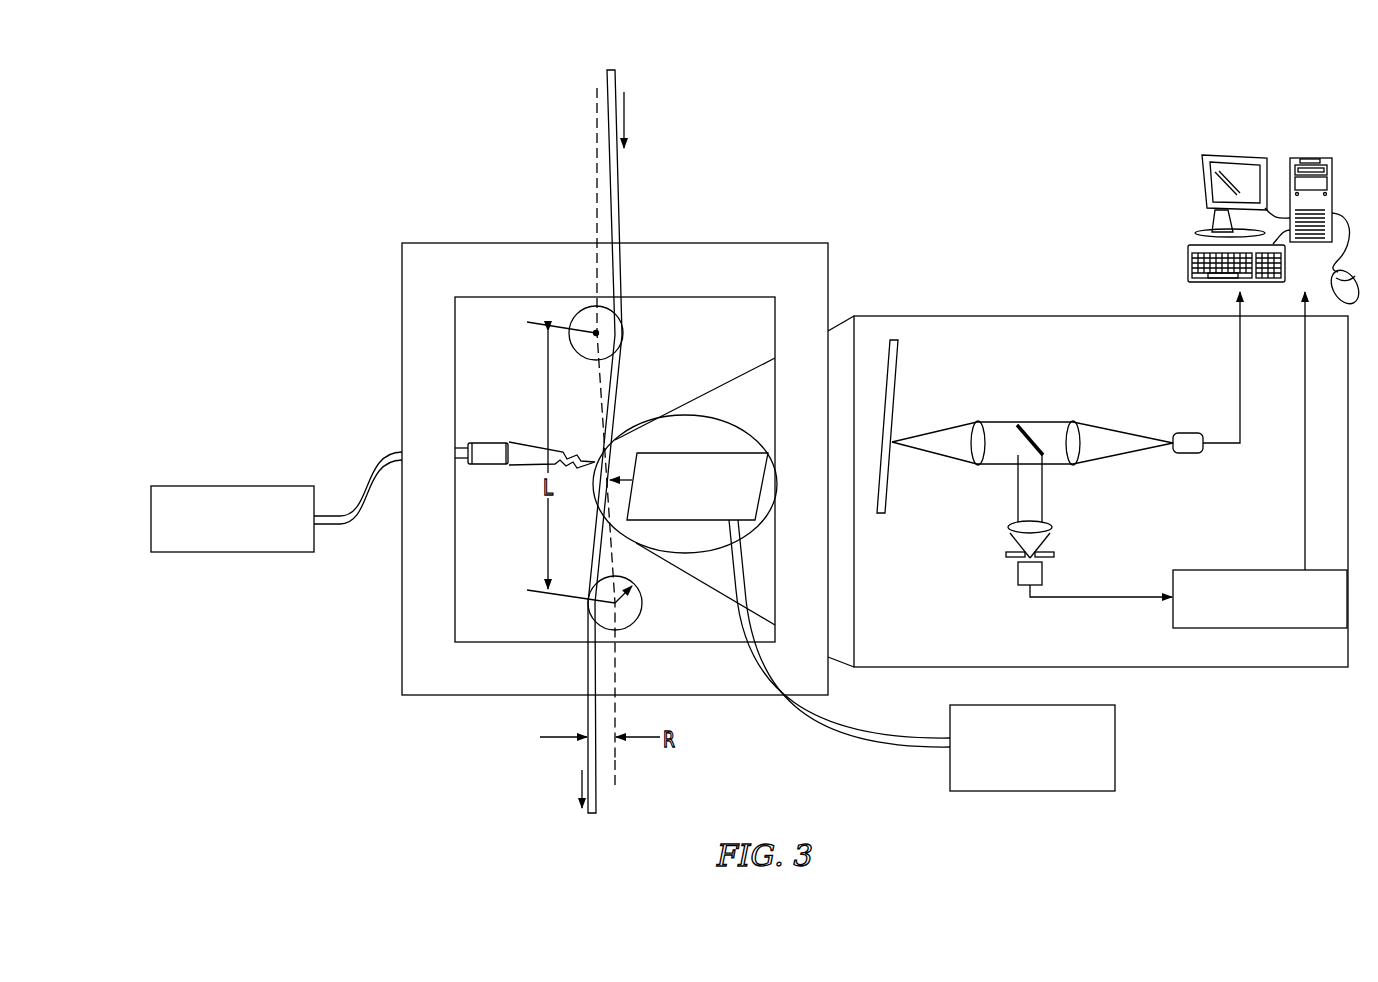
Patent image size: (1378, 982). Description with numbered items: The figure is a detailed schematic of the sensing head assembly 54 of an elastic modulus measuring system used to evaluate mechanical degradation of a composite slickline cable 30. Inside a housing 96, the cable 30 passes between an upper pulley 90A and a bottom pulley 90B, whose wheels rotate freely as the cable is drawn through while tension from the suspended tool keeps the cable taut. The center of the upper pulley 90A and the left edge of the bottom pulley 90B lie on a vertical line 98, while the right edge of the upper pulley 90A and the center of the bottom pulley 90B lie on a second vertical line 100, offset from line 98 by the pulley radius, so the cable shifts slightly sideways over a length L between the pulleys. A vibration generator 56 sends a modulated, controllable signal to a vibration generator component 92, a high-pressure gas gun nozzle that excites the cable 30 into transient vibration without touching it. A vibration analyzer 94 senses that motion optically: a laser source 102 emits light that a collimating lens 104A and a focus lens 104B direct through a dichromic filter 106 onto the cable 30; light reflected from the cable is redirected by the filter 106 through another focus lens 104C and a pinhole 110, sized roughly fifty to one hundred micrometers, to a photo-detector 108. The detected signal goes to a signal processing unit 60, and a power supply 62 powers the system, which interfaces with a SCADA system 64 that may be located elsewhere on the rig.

The composite slickline cable 30 is at (619, 165).
The sensing head assembly 54 is at (400, 293).
The vibration generator 56 is at (170, 554).
The signal processing unit 60 is at (1282, 630).
The power supply 62 is at (1115, 758).
The supervisory control and data acquisition (SCADA) system 64 is at (1313, 124).
The upper pulley 90A is at (580, 312).
The bottom pulley 90B is at (634, 622).
The vibration generator component 92 is at (495, 466).
The vibration analyzer 94 is at (687, 452).
The housing 96 is at (428, 256).
The vertical line 98 is at (597, 128).
The vertical line 100 is at (616, 763).
The laser source 102 is at (1190, 457).
The collimating lens 104A is at (1080, 435).
The focus lens 104B is at (973, 427).
The focus lens 104C is at (1052, 524).
The filter 106 is at (1033, 438).
The photo-detector 108 is at (1015, 572).
The pinhole 110 is at (994, 555).